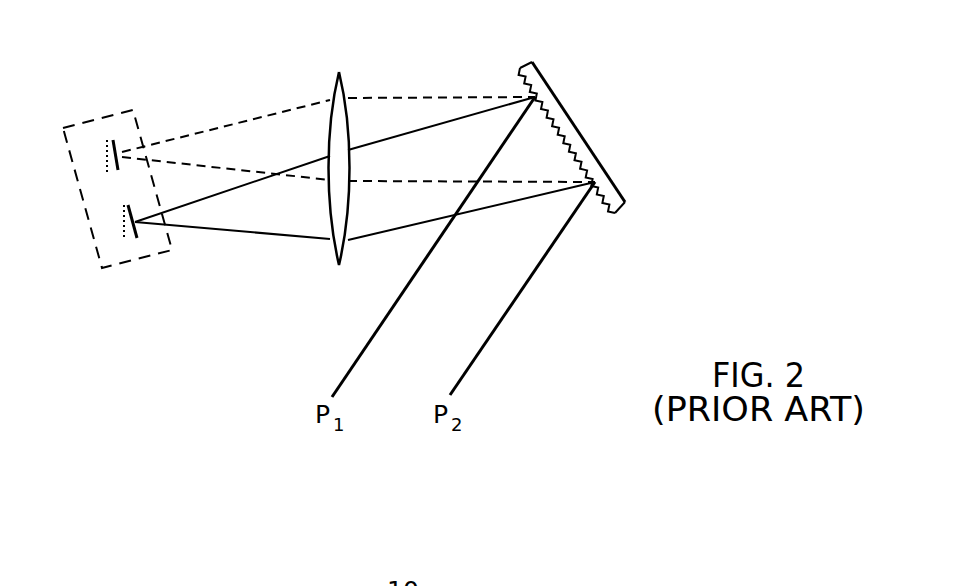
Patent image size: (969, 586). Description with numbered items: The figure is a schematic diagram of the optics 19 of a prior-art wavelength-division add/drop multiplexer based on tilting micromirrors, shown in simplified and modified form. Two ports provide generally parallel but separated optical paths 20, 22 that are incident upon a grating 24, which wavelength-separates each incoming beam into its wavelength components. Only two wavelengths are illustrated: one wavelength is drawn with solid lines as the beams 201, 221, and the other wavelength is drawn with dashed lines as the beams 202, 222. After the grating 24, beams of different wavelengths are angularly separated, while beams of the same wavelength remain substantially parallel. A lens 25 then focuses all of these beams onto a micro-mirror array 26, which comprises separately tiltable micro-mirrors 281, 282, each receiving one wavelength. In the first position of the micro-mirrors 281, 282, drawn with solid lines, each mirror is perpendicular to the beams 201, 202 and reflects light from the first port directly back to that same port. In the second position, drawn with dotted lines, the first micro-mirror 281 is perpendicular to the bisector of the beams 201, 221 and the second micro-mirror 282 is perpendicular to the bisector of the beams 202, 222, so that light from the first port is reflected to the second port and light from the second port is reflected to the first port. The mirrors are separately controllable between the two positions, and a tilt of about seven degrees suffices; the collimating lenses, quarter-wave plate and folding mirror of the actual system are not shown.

The optics 19 is at (620, 88).
The optical path 20 is at (412, 283).
The first-wavelength beam of the first optical path 201 is at (448, 120).
The second-wavelength beam of the first optical path 202 is at (392, 97).
The optical path 22 is at (532, 283).
The first-wavelength beam of the second optical path 221 is at (397, 233).
The second-wavelength beam of the second optical path 222 is at (372, 182).
The grating 24 is at (538, 70).
The lens 25 is at (338, 88).
The micro-mirror array 26 is at (92, 232).
The first micro-mirror 281 is at (140, 233).
The second micro-mirror 282 is at (116, 156).